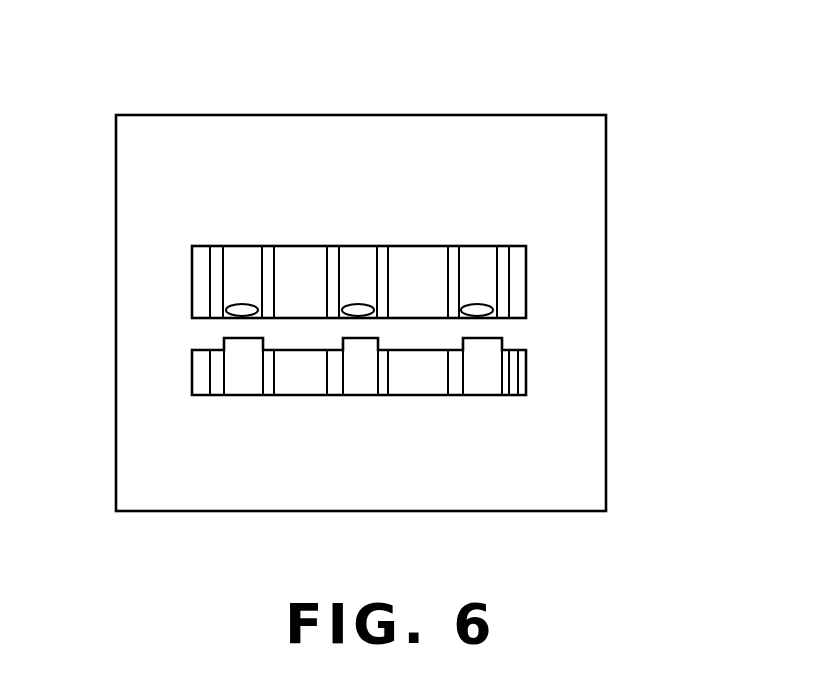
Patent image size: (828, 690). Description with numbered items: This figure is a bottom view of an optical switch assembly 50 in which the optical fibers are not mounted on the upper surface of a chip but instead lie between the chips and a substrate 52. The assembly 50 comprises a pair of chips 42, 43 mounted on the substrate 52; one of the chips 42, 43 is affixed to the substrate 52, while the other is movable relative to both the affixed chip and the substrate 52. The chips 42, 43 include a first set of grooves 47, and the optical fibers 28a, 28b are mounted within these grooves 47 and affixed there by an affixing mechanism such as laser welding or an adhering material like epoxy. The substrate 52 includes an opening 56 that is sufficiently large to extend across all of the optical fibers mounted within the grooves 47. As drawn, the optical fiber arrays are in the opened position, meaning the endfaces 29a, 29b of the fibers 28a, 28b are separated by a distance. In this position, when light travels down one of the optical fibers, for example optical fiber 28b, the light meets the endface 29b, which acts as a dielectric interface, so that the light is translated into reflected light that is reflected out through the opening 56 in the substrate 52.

The optical switch assembly 50 is at (640, 79).
The substrate 52 is at (578, 497).
The chip 42 is at (413, 264).
The chip 43 is at (423, 382).
The optical fiber 28b is at (486, 276).
The optical fiber 28a is at (490, 375).
The endface 29b is at (487, 326).
The endface 29a is at (494, 330).
The first set of grooves 47 is at (220, 296).
The opening 56 is at (300, 382).